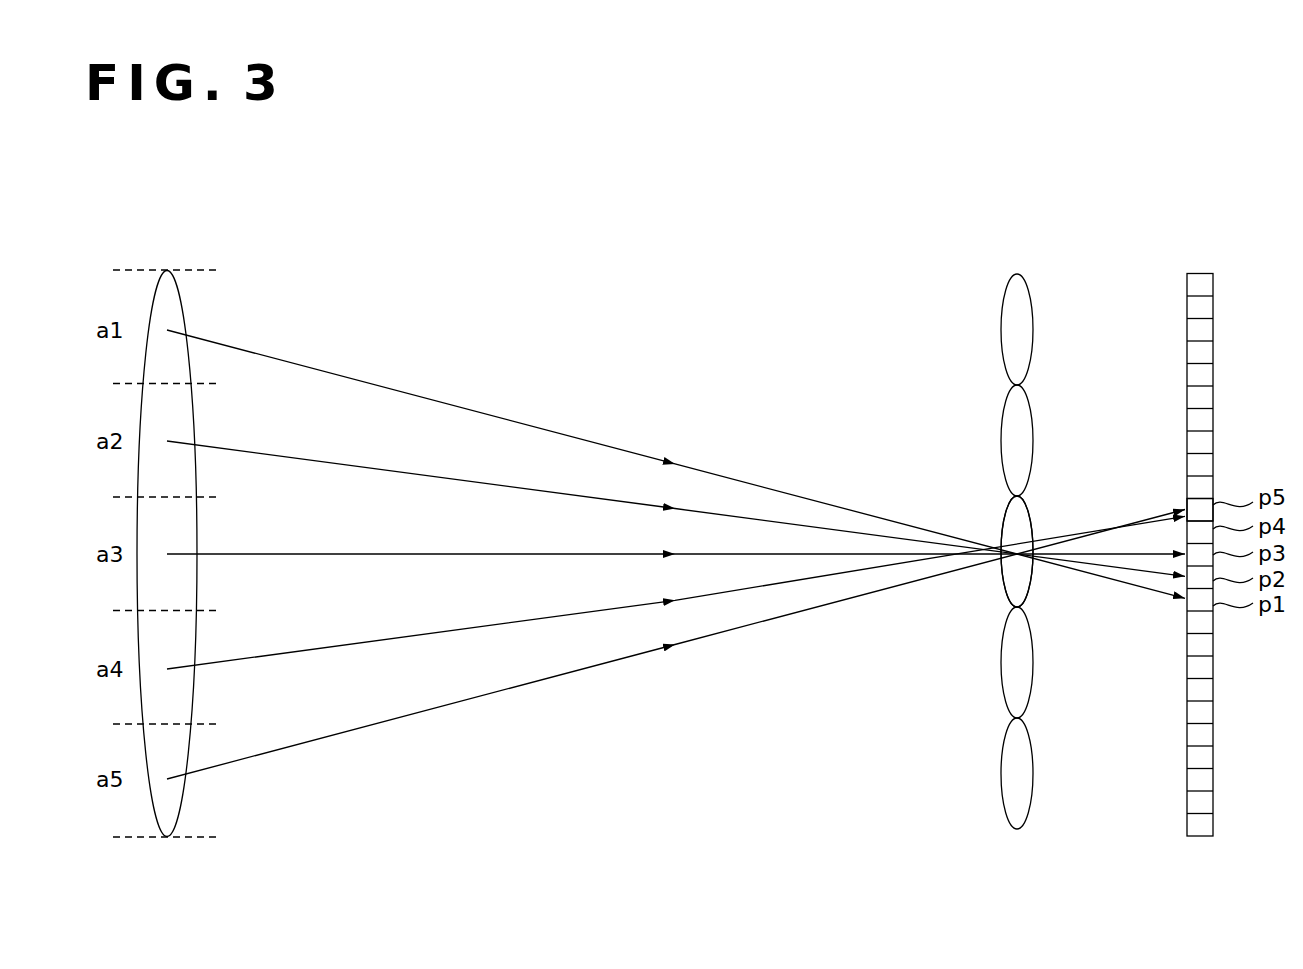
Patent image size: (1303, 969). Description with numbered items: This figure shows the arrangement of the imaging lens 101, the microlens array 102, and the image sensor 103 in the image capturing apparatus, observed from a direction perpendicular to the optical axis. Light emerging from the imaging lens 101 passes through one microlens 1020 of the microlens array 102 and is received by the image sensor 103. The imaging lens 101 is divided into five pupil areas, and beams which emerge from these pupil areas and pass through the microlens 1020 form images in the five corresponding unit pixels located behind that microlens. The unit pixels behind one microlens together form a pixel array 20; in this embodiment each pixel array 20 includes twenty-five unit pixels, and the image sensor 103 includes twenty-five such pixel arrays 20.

The imaging lens 101 is at (153, 300).
The microlens array 102 is at (1017, 274).
The microlens 1020 is at (1018, 534).
The image sensor 103 is at (1199, 274).
The pixel array 20 is at (1187, 503).